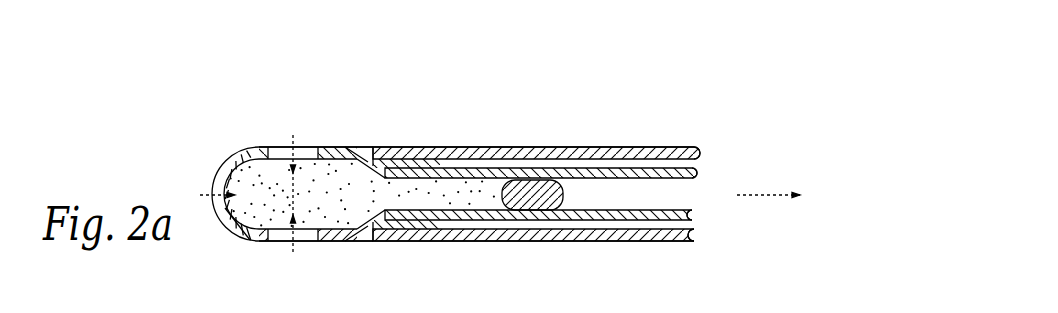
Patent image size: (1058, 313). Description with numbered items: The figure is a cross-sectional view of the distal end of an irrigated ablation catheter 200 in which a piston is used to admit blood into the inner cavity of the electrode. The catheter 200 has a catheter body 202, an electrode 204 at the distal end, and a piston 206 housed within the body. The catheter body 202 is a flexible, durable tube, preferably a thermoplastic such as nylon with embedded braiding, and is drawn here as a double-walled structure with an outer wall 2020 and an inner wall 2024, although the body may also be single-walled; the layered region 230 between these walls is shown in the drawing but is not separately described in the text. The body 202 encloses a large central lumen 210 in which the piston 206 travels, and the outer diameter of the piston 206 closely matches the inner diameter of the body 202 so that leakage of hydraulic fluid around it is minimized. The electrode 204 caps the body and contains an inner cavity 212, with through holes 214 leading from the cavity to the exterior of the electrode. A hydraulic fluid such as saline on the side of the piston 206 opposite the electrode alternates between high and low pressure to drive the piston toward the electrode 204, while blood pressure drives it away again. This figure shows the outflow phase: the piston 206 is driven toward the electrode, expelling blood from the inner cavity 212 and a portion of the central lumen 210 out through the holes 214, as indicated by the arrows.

The catheter assembly 200 is at (452, 93).
The catheter shaft 202 is at (658, 125).
The outer layer of shaft 2020 is at (575, 147).
The distal end of shaft 2024 is at (692, 147).
The distal cap 204 is at (221, 241).
The seal plug 206 is at (537, 207).
The lumen 210 is at (635, 197).
The filling material 212 is at (283, 210).
The wall of distal tip 214 is at (302, 143).
The joint 230 is at (523, 147).